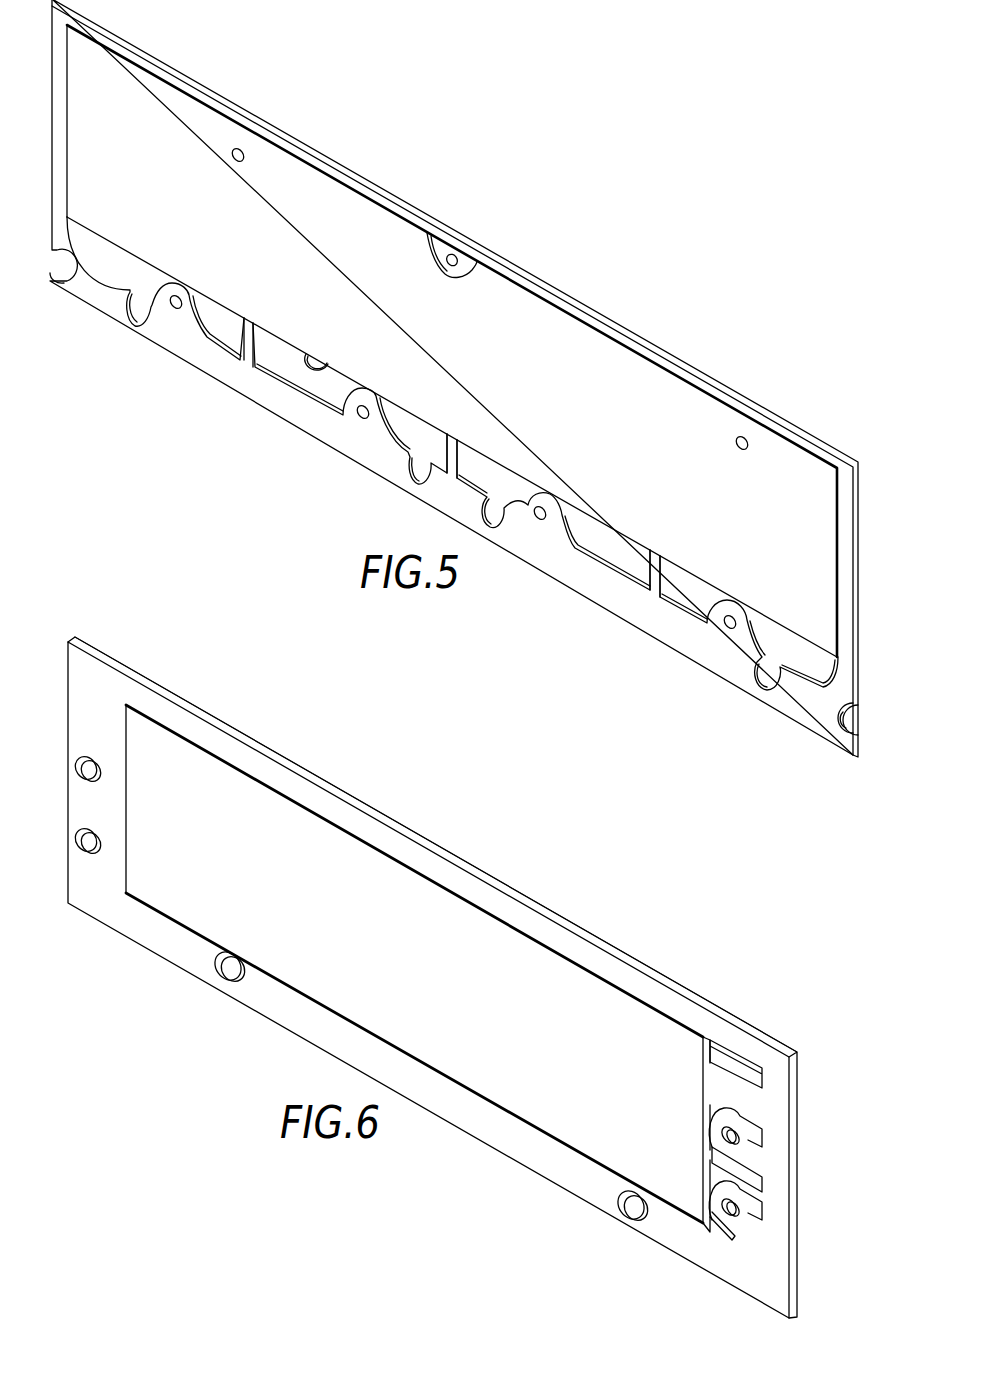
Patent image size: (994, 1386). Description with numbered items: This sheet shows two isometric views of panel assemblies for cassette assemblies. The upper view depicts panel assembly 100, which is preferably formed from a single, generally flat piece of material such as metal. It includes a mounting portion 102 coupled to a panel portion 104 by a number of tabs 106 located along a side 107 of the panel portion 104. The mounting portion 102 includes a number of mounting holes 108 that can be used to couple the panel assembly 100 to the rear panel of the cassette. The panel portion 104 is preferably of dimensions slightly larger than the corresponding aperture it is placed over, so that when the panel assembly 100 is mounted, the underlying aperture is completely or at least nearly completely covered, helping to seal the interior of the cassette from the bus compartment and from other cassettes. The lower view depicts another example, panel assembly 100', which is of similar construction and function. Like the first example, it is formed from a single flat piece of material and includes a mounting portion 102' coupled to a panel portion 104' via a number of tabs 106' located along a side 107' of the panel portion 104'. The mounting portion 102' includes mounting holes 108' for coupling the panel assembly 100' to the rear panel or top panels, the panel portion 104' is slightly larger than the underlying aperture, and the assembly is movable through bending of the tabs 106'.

In FIG. 5, the panel assembly 100 is at (454, 378).
In FIG. 5, the mounting portion 102 is at (452, 453).
In FIG. 5, the panel portion 104 is at (452, 341).
In FIG. 5, the tabs 106 is at (481, 446).
In FIG. 5, the side 107 is at (328, 346).
In FIG. 5, the mounting holes 108 is at (469, 427).
In FIG. 6, the panel assembly 100' is at (432, 977).
In FIG. 6, the mounting portion 102' is at (436, 844).
In FIG. 6, the panel portion 104' is at (414, 964).
In FIG. 6, the tabs 106' is at (704, 1138).
In FIG. 6, the side 107' is at (669, 1134).
In FIG. 6, the mounting holes 108' is at (431, 1010).